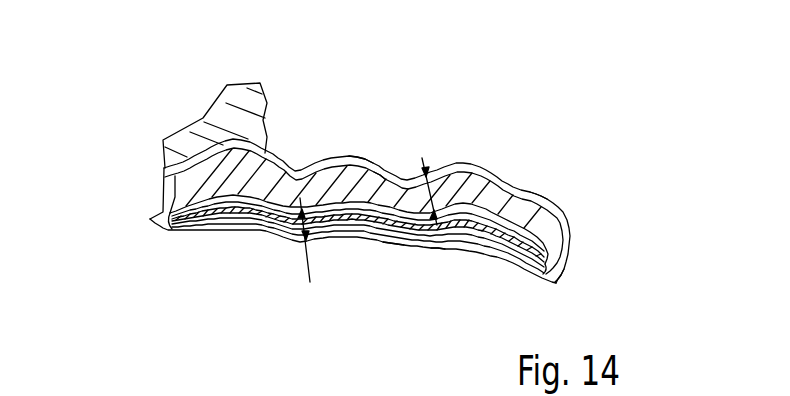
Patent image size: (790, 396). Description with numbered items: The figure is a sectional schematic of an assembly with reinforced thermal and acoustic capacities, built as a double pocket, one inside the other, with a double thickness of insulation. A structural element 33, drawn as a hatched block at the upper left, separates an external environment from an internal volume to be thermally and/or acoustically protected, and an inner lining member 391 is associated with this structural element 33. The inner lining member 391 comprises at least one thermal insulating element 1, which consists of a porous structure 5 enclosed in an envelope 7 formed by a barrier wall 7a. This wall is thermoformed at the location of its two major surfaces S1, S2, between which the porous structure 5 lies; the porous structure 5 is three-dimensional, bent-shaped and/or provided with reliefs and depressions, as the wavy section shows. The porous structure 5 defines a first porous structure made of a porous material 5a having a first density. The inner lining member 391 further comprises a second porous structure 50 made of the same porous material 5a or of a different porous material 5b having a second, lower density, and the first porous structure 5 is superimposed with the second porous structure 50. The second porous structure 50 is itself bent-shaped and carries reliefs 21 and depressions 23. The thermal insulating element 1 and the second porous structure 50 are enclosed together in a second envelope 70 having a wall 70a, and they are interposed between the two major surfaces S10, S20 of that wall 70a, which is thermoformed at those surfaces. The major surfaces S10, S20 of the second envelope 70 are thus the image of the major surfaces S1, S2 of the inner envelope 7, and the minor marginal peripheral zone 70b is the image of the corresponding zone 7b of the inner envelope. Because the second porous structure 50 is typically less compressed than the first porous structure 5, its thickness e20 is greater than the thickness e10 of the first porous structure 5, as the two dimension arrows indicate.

The thermal insulating element 1 is at (226, 228).
The structural element 33 is at (193, 121).
The second envelope 70 is at (552, 283).
The wall of second envelope 70a is at (309, 170).
The minor peripheral zone of second envelope 70b is at (148, 218).
The reliefs 21 is at (343, 153).
The depressions 23 is at (294, 181).
The first major surface of second envelope wall S10 is at (368, 158).
The first major surface of envelope wall S1 is at (380, 172).
The second porous structure 50 is at (428, 168).
The porous material 5b is at (535, 212).
The inner lining member 391 is at (541, 181).
The thickness of second porous structure e20 is at (454, 157).
The envelope 7 is at (358, 240).
The barrier wall 7a is at (513, 264).
The minor peripheral zone of envelope 7b is at (162, 232).
The second major surface of envelope wall S2 is at (393, 250).
The second major surface of second envelope wall S20 is at (440, 252).
The thickness of first porous structure e10 is at (305, 272).
The porous structure 5 is at (358, 265).
The porous material 5a is at (263, 218).